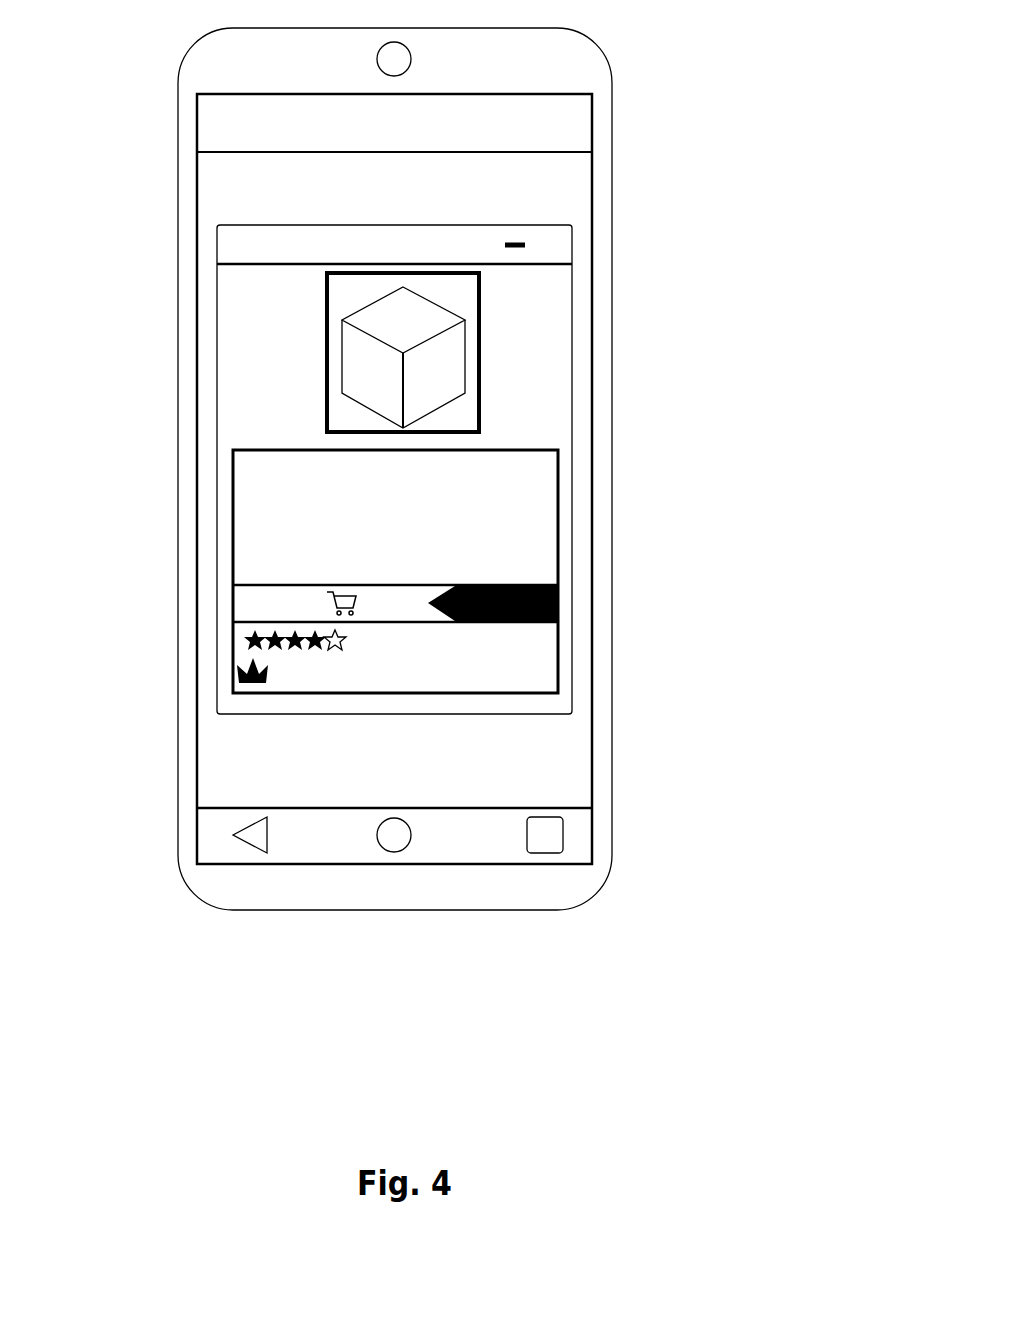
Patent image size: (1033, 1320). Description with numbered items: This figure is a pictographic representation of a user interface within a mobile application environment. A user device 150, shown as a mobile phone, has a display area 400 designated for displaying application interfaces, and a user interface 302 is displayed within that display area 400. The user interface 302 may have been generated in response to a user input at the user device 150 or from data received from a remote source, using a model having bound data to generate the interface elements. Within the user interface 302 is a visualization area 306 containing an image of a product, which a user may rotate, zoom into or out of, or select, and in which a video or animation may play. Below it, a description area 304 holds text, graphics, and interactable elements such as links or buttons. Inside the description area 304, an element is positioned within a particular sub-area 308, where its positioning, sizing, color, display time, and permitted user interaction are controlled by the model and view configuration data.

The user device 150 is at (698, 39).
The display area 400 is at (230, 771).
The user interface 302 is at (235, 365).
The visualization area 306 is at (460, 415).
The description area 304 is at (558, 492).
The sub-area 308 is at (510, 663).